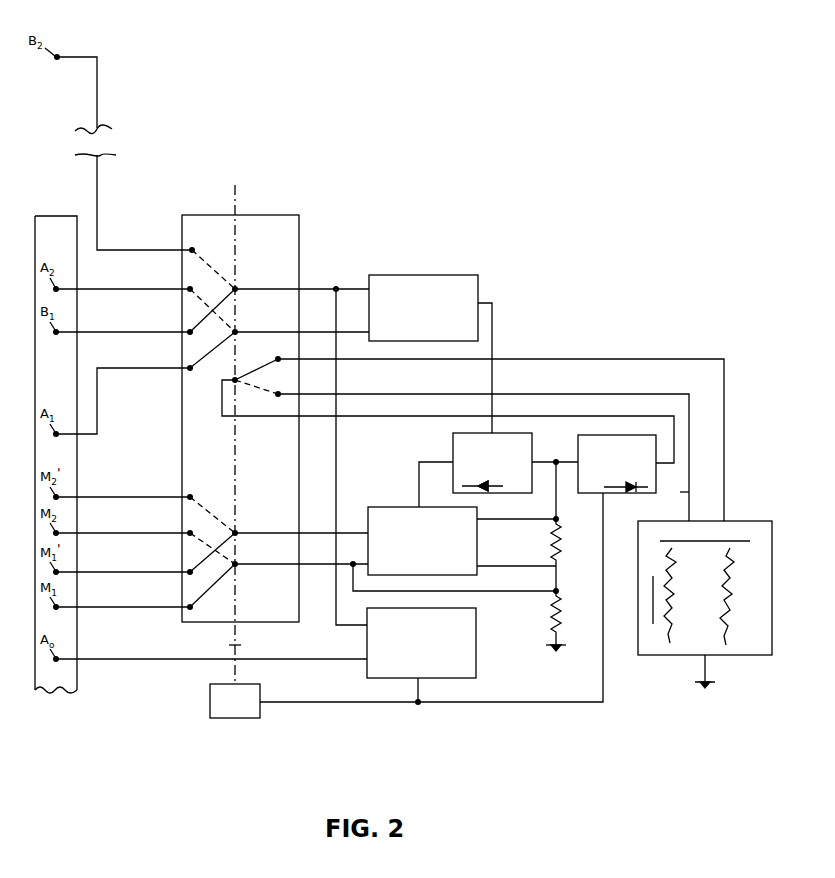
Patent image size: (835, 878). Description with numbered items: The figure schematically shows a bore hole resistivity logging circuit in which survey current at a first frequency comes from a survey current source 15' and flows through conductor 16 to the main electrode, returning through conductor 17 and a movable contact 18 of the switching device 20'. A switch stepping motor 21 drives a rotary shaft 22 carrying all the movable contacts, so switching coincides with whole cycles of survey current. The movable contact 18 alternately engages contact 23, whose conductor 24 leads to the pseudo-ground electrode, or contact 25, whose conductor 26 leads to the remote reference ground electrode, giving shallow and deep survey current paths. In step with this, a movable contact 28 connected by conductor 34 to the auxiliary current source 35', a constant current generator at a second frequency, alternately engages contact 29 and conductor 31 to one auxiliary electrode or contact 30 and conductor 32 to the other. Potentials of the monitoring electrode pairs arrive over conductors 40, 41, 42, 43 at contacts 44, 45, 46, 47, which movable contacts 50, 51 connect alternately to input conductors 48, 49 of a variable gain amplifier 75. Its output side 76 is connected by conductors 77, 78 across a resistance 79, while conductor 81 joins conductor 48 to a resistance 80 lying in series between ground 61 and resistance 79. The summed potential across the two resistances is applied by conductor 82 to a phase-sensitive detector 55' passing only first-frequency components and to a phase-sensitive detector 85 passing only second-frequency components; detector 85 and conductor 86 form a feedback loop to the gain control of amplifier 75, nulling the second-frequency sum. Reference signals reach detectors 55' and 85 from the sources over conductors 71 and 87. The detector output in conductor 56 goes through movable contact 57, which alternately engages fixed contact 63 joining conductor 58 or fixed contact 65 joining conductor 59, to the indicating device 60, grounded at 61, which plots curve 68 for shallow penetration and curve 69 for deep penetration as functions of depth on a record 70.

The switching unit 20' is at (259, 402).
The rotary shaft 22 is at (235, 213).
The conductor 26 is at (97, 217).
The contact 25 is at (194, 249).
The conductor 32 is at (107, 289).
The contact 30 is at (205, 281).
The conductor 24 is at (107, 332).
The contact 23 is at (194, 330).
The conductor 31 is at (107, 368).
The contact 29 is at (196, 360).
The movable contact 18 is at (226, 298).
The movable contact 28 is at (238, 346).
The conductor 34 is at (331, 330).
The conductor 17 is at (337, 482).
The movable contact 57 is at (255, 372).
The fixed contact 63 is at (279, 357).
The fixed contact 65 is at (276, 394).
The conductor 56 is at (408, 416).
The conductor 58 is at (596, 360).
The conductor 59 is at (596, 396).
The auxiliary current source 35' is at (424, 277).
The conductor 87 is at (493, 380).
The phase-sensitive detector 85 is at (453, 453).
The conductor 86 is at (419, 480).
The phase-sensitive detector 55' is at (625, 475).
The variable gain amplifier 75 is at (412, 507).
The input conductor 49 is at (306, 533).
The input conductor 48 is at (306, 566).
The output side 76 is at (480, 519).
The conductor 78 is at (499, 521).
The conductor 77 is at (499, 567).
The conductor 81 is at (478, 592).
The conductor 82 is at (558, 492).
The resistance 79 is at (562, 536).
The resistance 80 is at (562, 600).
The ground 61 is at (558, 650).
The conductor 43 is at (107, 497).
The contact 47 is at (193, 495).
The conductor 42 is at (107, 533).
The contact 46 is at (194, 531).
The conductor 41 is at (107, 572).
The contact 45 is at (191, 570).
The conductor 40 is at (107, 607).
The contact 44 is at (191, 605).
The movable contact 51 is at (238, 545).
The movable contact 50 is at (238, 580).
The conductor 16 is at (200, 661).
The survey current source 15' is at (442, 643).
The conductor 71 is at (490, 703).
The switch stepping motor 21 is at (260, 716).
The indicating device 60 is at (672, 657).
The curve 69 is at (676, 596).
The curve 68 is at (727, 605).
The record 70 is at (745, 652).